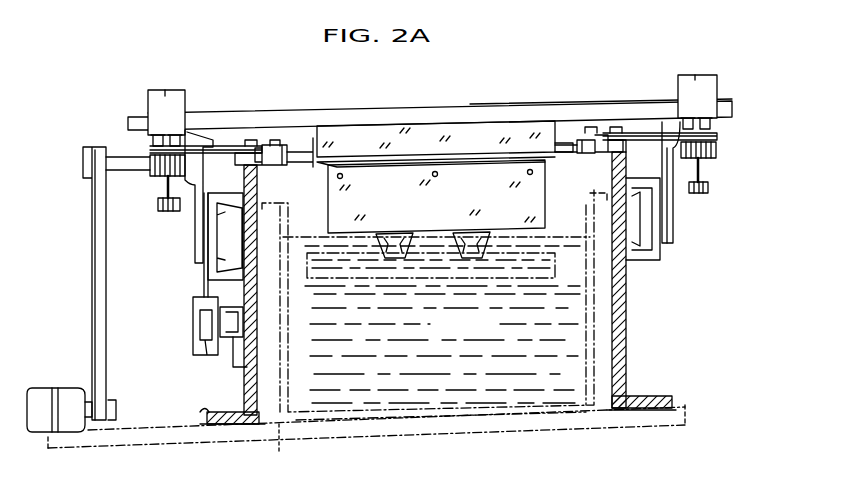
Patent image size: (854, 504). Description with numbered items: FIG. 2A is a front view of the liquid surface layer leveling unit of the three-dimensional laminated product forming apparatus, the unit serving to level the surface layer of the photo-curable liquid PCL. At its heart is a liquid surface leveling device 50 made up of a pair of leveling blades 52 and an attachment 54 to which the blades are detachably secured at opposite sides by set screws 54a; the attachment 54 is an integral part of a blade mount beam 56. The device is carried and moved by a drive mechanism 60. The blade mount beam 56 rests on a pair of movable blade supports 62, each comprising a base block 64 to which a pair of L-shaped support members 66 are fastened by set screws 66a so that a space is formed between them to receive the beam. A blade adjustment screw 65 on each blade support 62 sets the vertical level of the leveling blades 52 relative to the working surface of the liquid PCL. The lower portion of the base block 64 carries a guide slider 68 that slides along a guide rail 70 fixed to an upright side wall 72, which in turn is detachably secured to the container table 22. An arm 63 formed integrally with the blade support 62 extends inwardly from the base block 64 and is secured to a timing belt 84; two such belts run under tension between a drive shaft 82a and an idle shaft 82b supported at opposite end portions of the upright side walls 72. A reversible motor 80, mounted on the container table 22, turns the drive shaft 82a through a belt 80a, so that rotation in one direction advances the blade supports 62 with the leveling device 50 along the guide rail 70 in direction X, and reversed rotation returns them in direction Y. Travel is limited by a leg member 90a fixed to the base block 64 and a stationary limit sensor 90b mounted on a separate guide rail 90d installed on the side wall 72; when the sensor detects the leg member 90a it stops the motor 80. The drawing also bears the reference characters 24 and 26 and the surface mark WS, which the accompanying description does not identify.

The container table 22 is at (648, 420).
The processing bath 24 is at (428, 305).
The bath bottom 26 is at (281, 440).
The liquid surface WS is at (306, 233).
The set screws 54a is at (579, 187).
The liquid surface leveling device 50 is at (456, 100).
The blade mount beam 56 is at (508, 102).
The attachment 54 is at (362, 138).
The leveling blades 52 is at (411, 209).
The photo-curable liquid PCL is at (470, 329).
The upright side wall 72 is at (205, 426).
The guide rail 70 is at (634, 246).
The drive mechanism 60 is at (139, 312).
The belt 80a is at (90, 262).
The reversible motor 80 is at (62, 386).
The drive shaft 82a is at (117, 155).
The L-shaped support members 66 is at (150, 90).
The movable blade supports 62 is at (170, 88).
The idle shaft 82b is at (304, 150).
The timing belt 84 is at (268, 140).
The set screws 66a is at (152, 158).
The blade adjustment screw 65 is at (158, 212).
The arm 63 is at (213, 130).
The base block 64 is at (193, 232).
The guide slider 68 is at (662, 250).
The leg member 90a is at (208, 290).
The stationary limit sensor 90b is at (200, 350).
The guide rail 90d is at (222, 356).